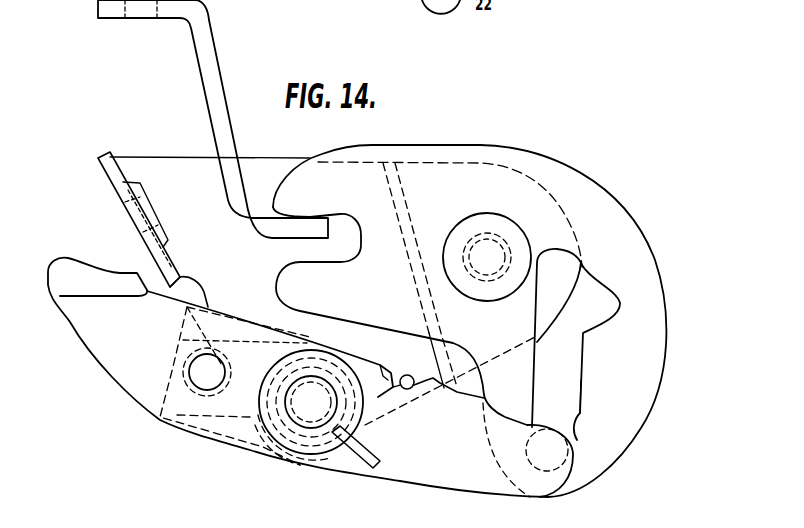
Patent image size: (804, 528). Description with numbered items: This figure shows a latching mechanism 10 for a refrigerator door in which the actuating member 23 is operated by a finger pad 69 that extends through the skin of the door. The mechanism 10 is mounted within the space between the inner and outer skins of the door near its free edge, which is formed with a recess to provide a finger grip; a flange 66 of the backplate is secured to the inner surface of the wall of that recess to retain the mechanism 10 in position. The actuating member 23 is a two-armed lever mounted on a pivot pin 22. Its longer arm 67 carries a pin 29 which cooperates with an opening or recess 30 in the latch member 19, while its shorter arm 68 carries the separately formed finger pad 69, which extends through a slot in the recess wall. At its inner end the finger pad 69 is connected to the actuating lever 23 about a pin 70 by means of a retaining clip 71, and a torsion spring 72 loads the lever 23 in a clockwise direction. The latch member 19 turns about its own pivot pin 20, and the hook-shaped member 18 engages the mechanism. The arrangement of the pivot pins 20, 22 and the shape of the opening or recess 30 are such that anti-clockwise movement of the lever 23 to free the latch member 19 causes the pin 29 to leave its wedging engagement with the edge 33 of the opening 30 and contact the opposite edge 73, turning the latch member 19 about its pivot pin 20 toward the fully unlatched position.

The mechanism 10 is at (506, 147).
The hook lever 18 is at (212, 73).
The latch member 19 is at (393, 150).
The pivot pin 20 is at (482, 248).
The pivot pin 22 is at (310, 402).
The actuating member 23 is at (411, 449).
The pin 29 is at (570, 457).
The opening or recess 30 is at (553, 338).
The edge 33 is at (580, 413).
The flange 66 is at (123, 165).
The longer arm 67 is at (450, 470).
The shorter arm 68 is at (237, 410).
The finger pad 69 is at (143, 367).
The pin 70 is at (205, 390).
The retaining clip 71 is at (245, 337).
The torsion spring 72 is at (298, 466).
The opposite edge 73 is at (451, 414).